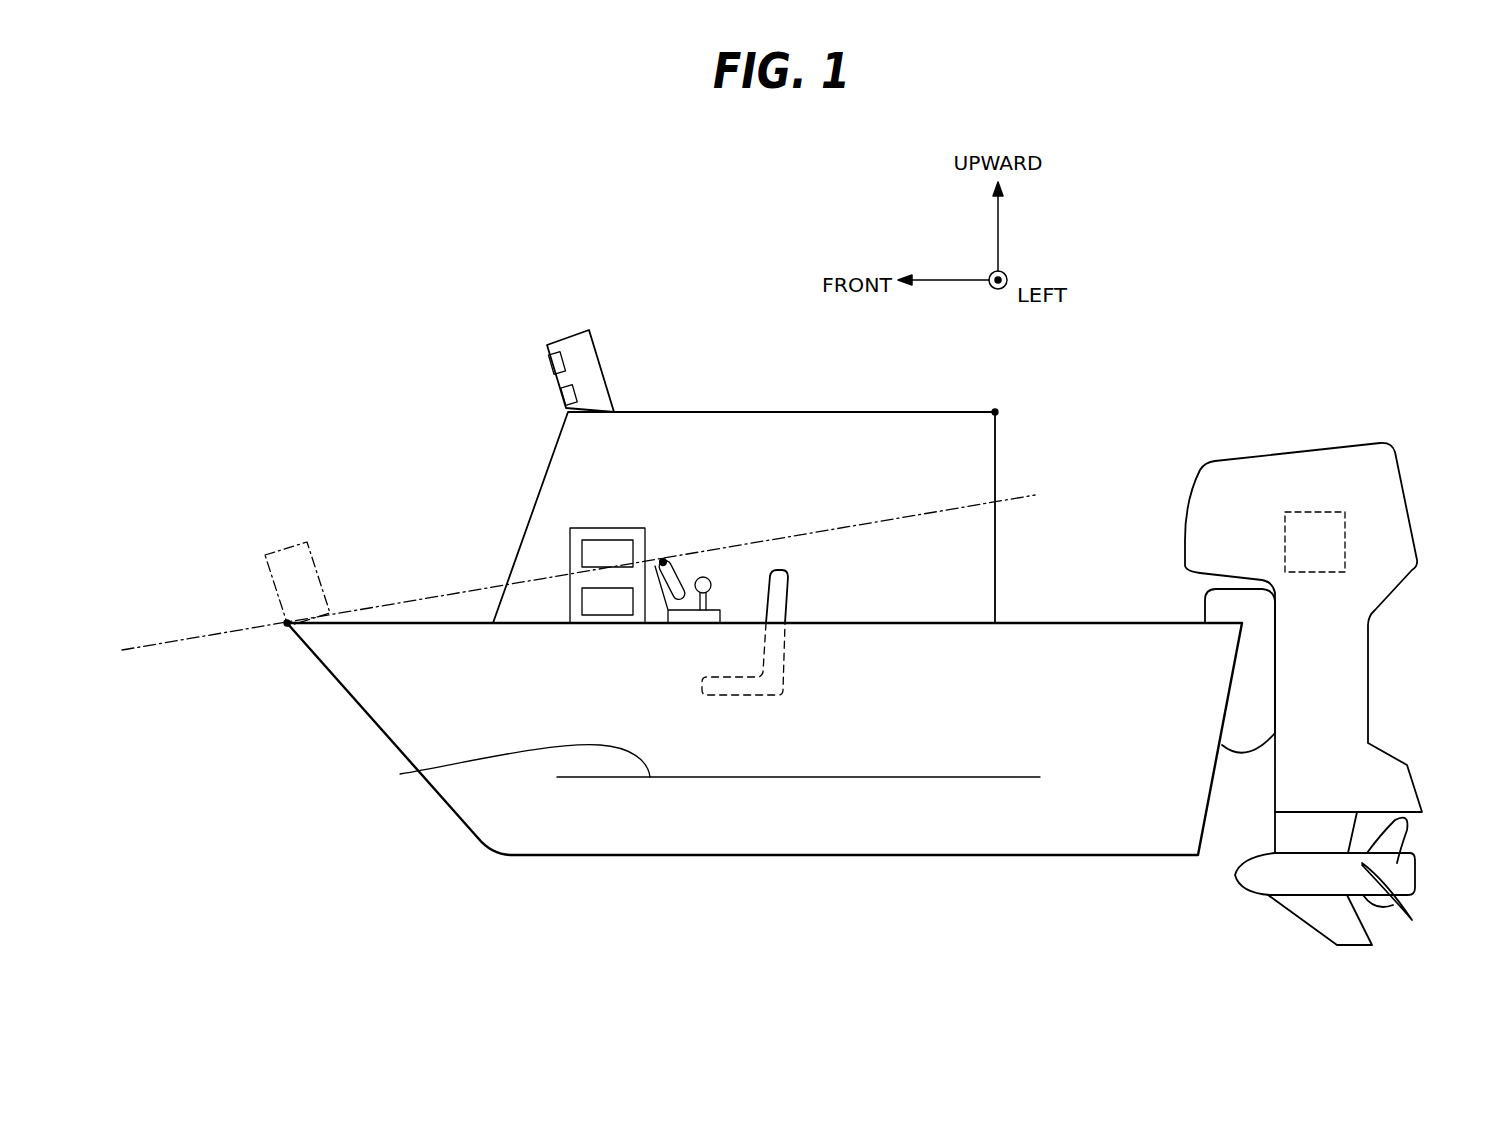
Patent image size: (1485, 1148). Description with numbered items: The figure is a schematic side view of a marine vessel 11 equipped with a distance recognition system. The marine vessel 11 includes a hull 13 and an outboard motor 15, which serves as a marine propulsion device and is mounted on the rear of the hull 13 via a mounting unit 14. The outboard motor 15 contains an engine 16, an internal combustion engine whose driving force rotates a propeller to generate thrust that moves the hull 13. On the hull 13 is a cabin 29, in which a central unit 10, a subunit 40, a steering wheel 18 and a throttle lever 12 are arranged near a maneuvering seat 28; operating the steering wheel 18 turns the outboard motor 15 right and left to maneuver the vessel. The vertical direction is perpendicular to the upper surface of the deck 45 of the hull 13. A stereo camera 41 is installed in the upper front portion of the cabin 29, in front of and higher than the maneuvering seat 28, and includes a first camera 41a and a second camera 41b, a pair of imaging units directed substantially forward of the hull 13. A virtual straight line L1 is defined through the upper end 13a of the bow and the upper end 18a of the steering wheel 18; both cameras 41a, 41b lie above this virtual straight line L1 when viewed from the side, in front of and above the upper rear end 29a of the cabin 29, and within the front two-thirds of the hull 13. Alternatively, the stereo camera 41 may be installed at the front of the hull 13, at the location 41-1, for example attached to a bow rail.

The central unit 10 is at (578, 549).
The marine vessel 11 is at (434, 322).
The throttle lever 12 is at (703, 577).
The hull 13 is at (1075, 608).
The upper end of a bow 13a is at (285, 621).
The mounting unit 14 is at (1210, 594).
The outboard motor 15 is at (1329, 650).
The engine 16 is at (1346, 533).
The steering wheel 18 is at (680, 535).
The upper end of the steering wheel 18a is at (665, 558).
The maneuvering seat 28 is at (778, 569).
The cabin 29 is at (800, 412).
The upper rear end of the cabin 29a is at (995, 410).
The subunit 40 is at (570, 603).
The stereo camera 41 is at (543, 325).
The location 41-1 is at (283, 552).
The first camera 41a is at (562, 398).
The second camera 41b is at (552, 365).
The deck 45 is at (432, 771).
The virtual straight line L1 is at (142, 647).